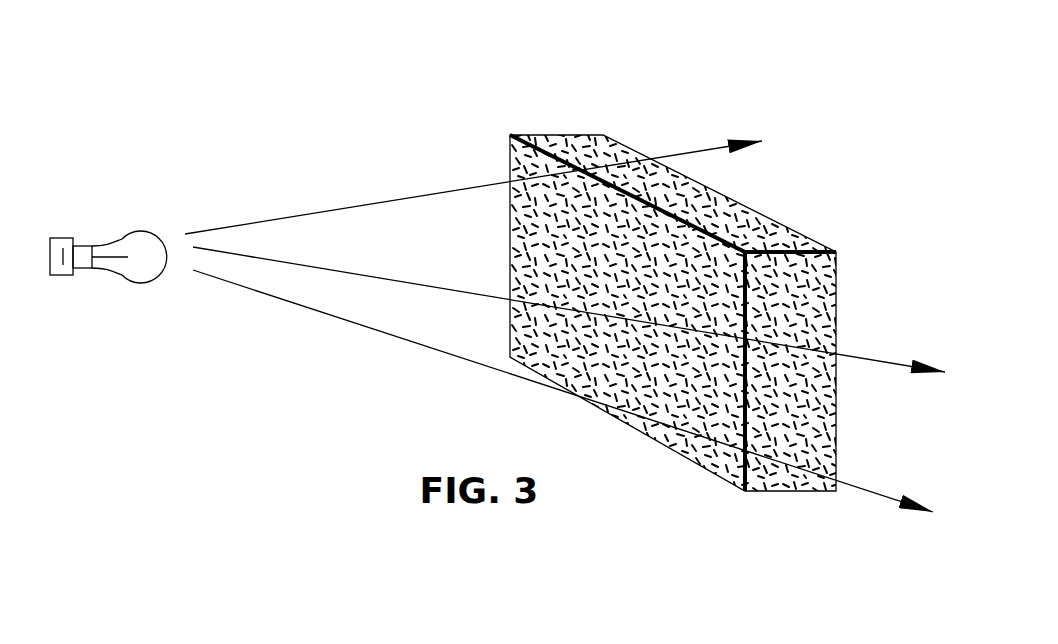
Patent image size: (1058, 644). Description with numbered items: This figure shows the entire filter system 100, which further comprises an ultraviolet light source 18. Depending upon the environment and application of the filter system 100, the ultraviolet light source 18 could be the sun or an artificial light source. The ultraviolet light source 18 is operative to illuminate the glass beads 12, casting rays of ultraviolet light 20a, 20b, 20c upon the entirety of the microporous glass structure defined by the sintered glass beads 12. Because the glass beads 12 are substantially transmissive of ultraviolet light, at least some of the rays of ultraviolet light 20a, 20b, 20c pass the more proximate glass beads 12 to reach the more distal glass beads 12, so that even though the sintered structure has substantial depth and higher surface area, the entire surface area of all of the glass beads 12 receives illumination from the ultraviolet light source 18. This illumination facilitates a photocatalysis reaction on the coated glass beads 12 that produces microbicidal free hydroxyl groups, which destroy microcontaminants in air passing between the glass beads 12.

The filter system 100 is at (689, 76).
The glass beads 12 is at (800, 243).
The ultraviolet light source 18 is at (138, 228).
The ray of ultraviolet light 20a is at (373, 330).
The ray of ultraviolet light 20b is at (305, 267).
The ray of ultraviolet light 20c is at (360, 205).